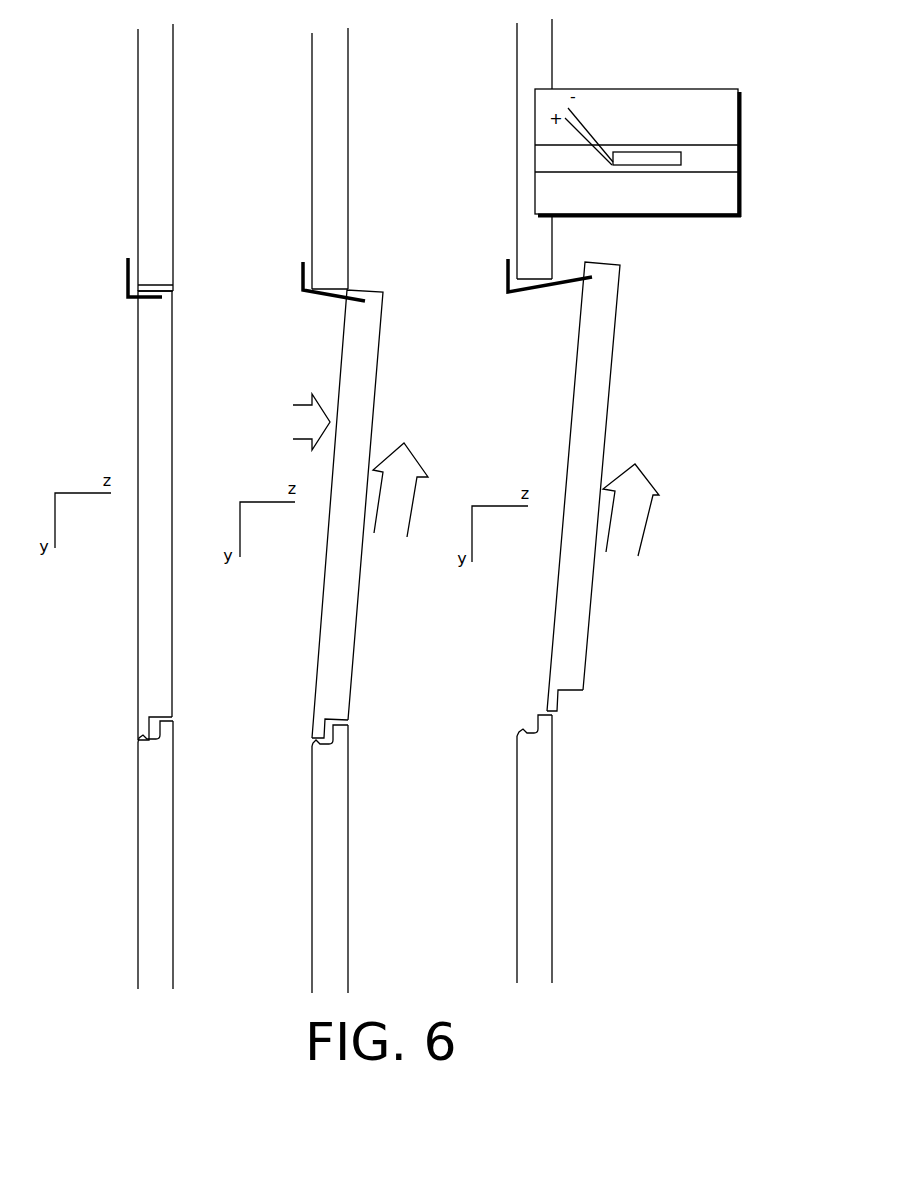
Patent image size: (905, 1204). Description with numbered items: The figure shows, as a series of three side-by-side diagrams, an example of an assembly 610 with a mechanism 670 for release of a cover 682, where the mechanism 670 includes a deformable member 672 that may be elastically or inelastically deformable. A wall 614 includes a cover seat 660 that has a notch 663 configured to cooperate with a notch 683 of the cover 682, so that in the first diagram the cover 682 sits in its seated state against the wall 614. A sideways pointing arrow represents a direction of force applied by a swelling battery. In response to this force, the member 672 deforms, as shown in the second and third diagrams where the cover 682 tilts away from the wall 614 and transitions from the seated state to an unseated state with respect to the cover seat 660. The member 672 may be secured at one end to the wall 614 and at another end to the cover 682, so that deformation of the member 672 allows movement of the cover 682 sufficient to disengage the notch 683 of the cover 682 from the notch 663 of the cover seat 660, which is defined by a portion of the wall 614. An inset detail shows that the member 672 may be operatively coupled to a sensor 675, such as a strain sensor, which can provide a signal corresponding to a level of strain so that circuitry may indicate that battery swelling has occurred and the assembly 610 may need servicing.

The assembly 610 is at (125, 98).
The wall 614 is at (354, 506).
The cover seat 660 is at (173, 285).
The notch 663 is at (142, 741).
The mechanism 670 is at (318, 282).
The deformable member 672 is at (130, 300).
The sensor 675 is at (652, 152).
The cover 682 is at (411, 501).
The notch 683 is at (157, 717).